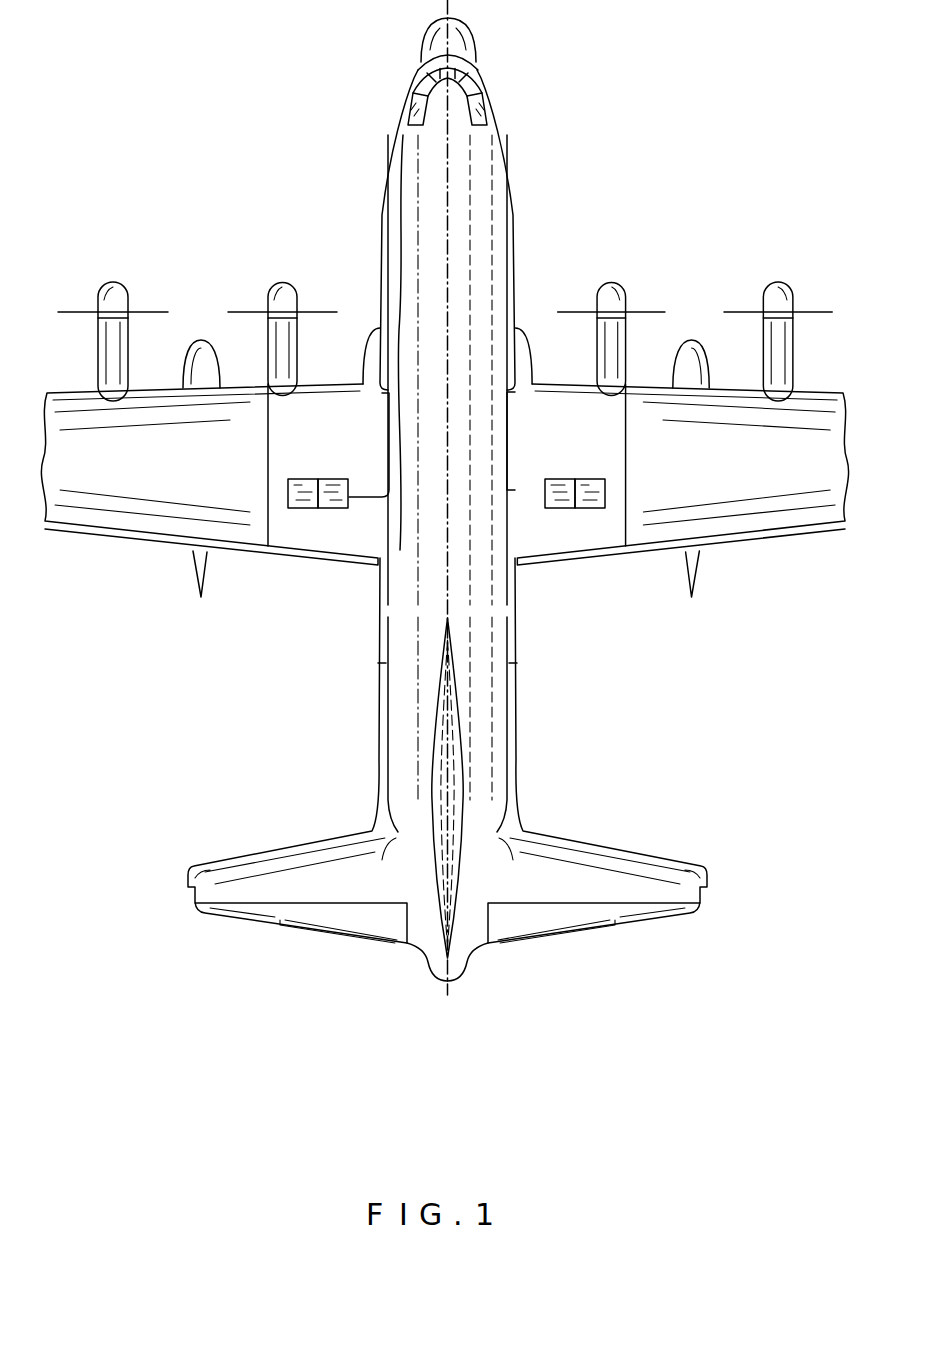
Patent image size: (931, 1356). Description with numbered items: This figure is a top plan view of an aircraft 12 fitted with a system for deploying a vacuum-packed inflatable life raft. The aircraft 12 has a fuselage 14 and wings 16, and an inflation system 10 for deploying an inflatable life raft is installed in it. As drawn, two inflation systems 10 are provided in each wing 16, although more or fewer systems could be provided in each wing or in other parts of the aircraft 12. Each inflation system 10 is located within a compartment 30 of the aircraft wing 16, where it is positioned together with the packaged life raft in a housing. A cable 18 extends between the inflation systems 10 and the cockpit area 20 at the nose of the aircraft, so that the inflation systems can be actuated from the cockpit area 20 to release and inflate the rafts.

The inflation system 10 is at (305, 480).
The aircraft 12 is at (519, 190).
The fuselage 14 is at (508, 270).
The wing 16 is at (142, 512).
The cable 18 is at (395, 230).
The cockpit area 20 is at (397, 118).
The compartment 30 is at (337, 479).